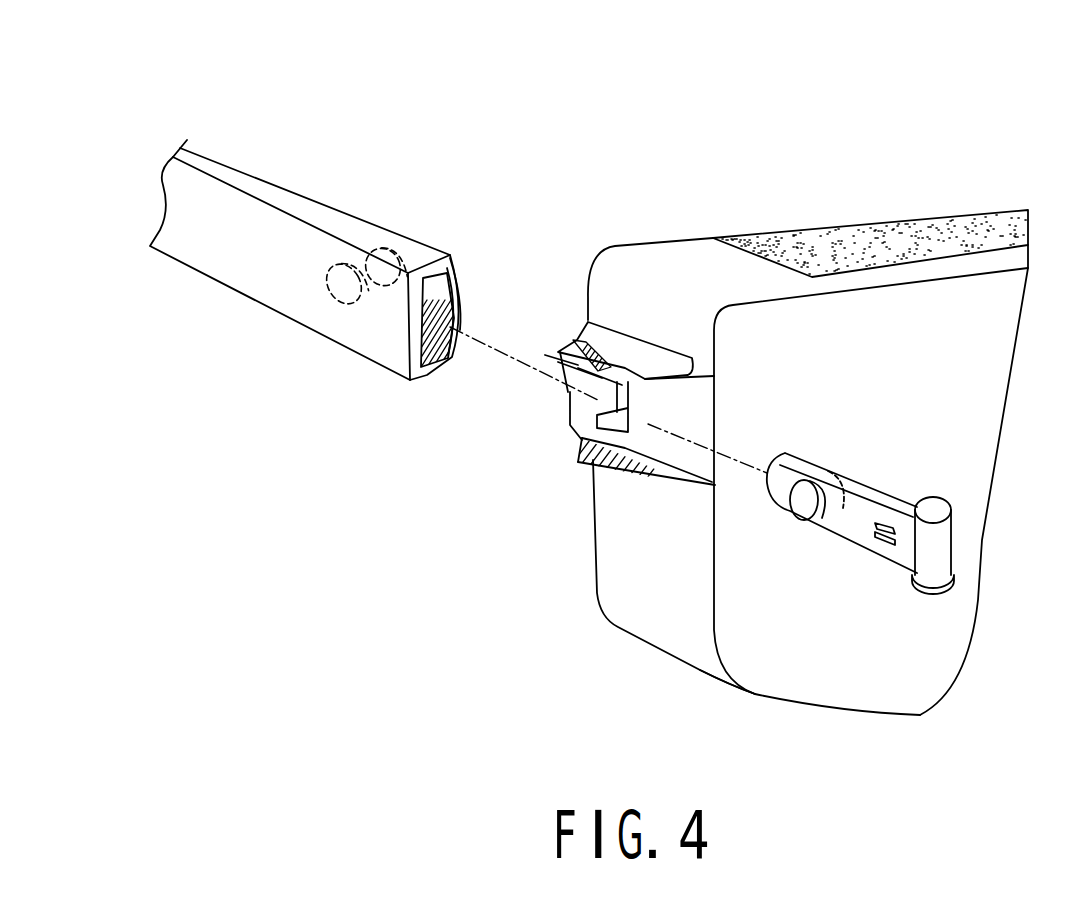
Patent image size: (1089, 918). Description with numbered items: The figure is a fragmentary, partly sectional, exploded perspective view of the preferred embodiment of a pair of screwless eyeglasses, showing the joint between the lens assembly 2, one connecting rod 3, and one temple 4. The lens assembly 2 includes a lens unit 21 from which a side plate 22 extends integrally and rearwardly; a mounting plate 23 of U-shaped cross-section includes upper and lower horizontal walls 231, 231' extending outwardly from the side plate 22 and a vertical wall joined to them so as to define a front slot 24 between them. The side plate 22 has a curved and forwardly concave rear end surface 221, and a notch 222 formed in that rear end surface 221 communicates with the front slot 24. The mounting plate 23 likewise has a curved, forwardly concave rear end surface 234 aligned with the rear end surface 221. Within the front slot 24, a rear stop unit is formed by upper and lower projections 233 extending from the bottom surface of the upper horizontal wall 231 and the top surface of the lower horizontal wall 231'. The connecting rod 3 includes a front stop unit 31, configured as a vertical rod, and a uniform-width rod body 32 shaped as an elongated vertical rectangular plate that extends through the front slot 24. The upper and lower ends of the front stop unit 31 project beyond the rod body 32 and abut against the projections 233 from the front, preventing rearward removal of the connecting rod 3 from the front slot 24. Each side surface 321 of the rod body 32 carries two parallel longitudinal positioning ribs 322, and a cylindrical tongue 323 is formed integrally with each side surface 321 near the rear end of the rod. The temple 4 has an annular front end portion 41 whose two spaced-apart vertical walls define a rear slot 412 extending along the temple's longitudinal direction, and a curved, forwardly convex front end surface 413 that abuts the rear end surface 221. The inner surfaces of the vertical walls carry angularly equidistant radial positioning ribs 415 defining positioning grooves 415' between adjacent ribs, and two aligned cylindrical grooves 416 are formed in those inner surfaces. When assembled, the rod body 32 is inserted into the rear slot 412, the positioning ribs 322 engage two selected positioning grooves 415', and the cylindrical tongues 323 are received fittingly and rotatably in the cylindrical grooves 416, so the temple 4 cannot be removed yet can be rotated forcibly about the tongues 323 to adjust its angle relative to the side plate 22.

The lens assembly 2 is at (848, 212).
The lens unit 21 is at (950, 385).
The side plate 22 is at (642, 612).
The mounting plate 23 is at (585, 438).
The upper horizontal wall 231 is at (625, 253).
The lower horizontal wall 231' is at (614, 532).
The projection 233 is at (587, 340).
The rear end surface 221 is at (590, 410).
The notch 222 is at (572, 395).
The rear end surface 234 is at (575, 418).
The front slot 24 is at (678, 405).
The connecting rod 3 is at (845, 552).
The front stop unit 31 is at (933, 542).
The rod body 32 is at (838, 520).
The side surface 321 is at (858, 471).
The positioning rib 322 is at (893, 544).
The cylindrical tongue 323 is at (712, 662).
The temple 4 is at (308, 188).
The front end portion 41 is at (277, 303).
The rear slot 412 is at (430, 360).
The front end surface 413 is at (455, 305).
The positioning rib 415 is at (417, 270).
The positioning groove 415' is at (490, 242).
The cylindrical groove 416 is at (340, 305).